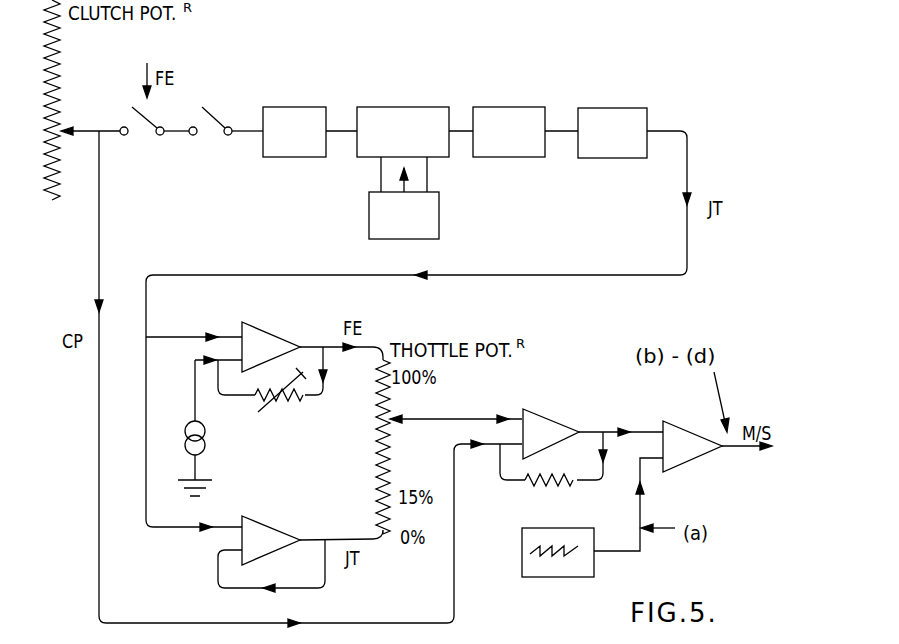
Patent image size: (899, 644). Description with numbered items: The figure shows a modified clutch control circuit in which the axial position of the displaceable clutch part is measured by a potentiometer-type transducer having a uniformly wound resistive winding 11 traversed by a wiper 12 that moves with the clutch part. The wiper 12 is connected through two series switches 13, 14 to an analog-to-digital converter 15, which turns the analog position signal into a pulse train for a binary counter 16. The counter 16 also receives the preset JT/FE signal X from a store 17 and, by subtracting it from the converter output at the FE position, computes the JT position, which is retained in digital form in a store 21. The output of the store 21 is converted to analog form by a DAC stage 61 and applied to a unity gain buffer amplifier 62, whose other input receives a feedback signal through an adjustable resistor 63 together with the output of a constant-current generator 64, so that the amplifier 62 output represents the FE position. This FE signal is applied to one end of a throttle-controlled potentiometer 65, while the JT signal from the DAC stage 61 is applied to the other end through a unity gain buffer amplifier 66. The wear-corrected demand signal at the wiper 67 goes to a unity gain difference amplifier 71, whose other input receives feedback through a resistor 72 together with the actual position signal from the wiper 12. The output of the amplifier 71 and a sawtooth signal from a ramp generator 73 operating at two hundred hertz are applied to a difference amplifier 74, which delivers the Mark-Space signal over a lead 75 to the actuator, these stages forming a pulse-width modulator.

The resistive winding 11 is at (61, 58).
The wiper 12 is at (82, 128).
The switch 13 is at (139, 136).
The switch 14 is at (208, 136).
The analog-to-digital converter 15 is at (313, 107).
The binary counter 16 is at (409, 107).
The store 17 is at (369, 218).
The store 21 is at (512, 107).
The DAC stage 61 is at (630, 108).
The unity gain buffer amplifier 62 is at (283, 336).
The resistor 63 is at (293, 406).
The constant-current generator 64 is at (210, 428).
The potentiometer 65 is at (377, 468).
The unity gain buffer amplifier 66 is at (280, 530).
The wiper 67 is at (456, 409).
The unity gain difference amplifier 71 is at (547, 418).
The resistor 72 is at (549, 484).
The ramp (sawtooth) generator 73 is at (548, 577).
The difference amplifier 74 is at (696, 432).
The lead 75 is at (736, 450).